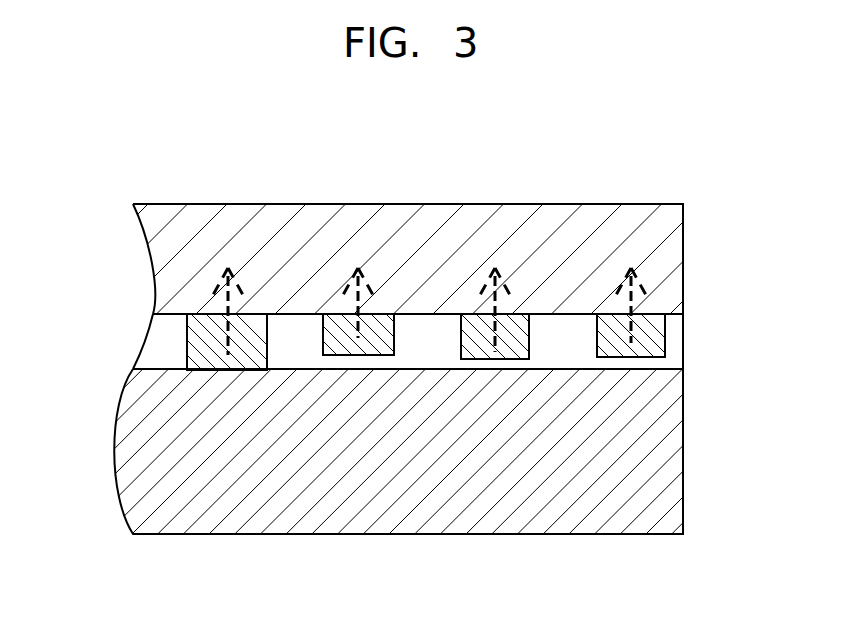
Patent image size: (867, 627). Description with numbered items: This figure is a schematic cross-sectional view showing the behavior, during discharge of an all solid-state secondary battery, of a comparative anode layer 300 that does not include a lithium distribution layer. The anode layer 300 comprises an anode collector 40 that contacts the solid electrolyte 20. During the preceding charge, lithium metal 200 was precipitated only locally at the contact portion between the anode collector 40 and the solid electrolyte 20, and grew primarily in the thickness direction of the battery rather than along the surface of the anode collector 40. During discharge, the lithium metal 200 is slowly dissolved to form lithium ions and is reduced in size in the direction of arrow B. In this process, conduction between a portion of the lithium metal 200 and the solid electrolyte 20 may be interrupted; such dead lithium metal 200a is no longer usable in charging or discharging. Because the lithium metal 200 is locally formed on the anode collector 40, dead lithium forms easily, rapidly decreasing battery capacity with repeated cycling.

The anode layer 300 is at (431, 383).
The anode collector 40 is at (667, 261).
The solid electrolyte 20 is at (667, 456).
The arrow B is at (667, 331).
The lithium metal 200 is at (245, 355).
The dead lithium metal 200a is at (375, 340).